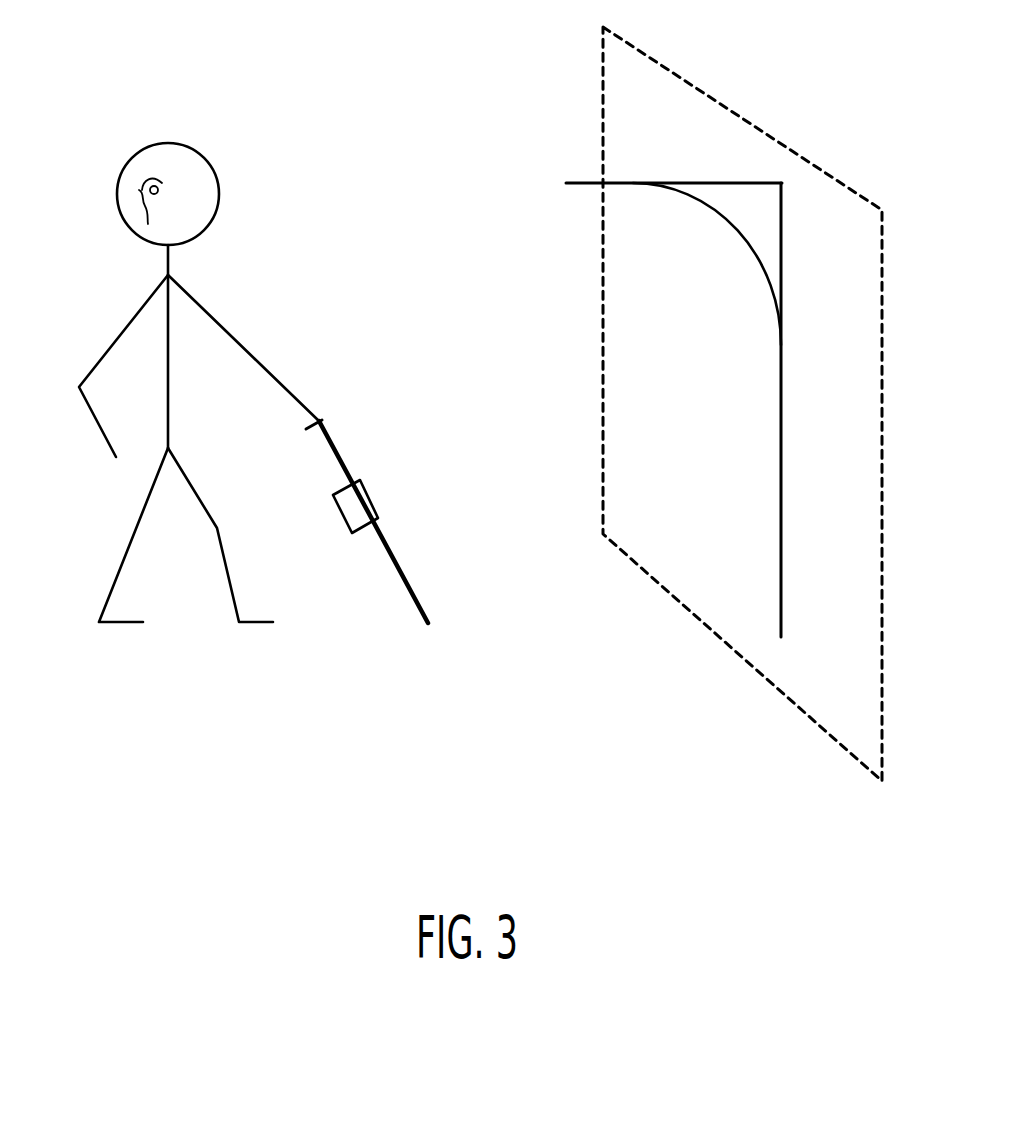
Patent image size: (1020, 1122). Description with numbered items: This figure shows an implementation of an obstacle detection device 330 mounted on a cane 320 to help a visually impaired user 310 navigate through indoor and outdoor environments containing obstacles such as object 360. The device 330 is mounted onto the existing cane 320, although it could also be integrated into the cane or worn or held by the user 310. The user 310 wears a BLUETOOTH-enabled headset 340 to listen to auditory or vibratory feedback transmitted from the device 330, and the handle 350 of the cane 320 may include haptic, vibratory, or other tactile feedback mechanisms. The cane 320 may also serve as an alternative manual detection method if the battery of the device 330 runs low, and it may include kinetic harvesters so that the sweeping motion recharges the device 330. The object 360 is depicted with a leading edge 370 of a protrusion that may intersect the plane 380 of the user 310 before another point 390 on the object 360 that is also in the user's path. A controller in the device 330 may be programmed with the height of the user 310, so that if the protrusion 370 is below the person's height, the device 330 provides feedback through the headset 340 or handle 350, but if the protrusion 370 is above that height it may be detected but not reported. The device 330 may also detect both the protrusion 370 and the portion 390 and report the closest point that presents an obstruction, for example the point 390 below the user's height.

The user 310 is at (212, 172).
The cane 320 is at (343, 457).
The device 330 is at (372, 492).
The headset 340 is at (138, 191).
The handle 350 is at (319, 420).
The object 360 is at (781, 183).
The leading edge 370 is at (575, 183).
The plane 380 is at (602, 80).
The point 390 is at (781, 488).